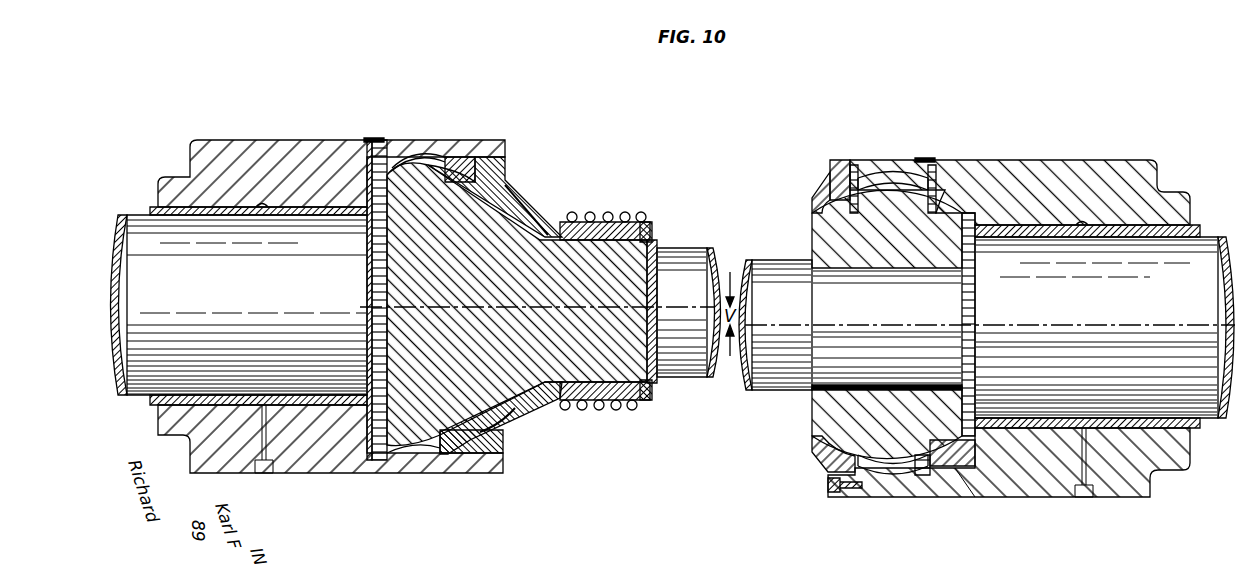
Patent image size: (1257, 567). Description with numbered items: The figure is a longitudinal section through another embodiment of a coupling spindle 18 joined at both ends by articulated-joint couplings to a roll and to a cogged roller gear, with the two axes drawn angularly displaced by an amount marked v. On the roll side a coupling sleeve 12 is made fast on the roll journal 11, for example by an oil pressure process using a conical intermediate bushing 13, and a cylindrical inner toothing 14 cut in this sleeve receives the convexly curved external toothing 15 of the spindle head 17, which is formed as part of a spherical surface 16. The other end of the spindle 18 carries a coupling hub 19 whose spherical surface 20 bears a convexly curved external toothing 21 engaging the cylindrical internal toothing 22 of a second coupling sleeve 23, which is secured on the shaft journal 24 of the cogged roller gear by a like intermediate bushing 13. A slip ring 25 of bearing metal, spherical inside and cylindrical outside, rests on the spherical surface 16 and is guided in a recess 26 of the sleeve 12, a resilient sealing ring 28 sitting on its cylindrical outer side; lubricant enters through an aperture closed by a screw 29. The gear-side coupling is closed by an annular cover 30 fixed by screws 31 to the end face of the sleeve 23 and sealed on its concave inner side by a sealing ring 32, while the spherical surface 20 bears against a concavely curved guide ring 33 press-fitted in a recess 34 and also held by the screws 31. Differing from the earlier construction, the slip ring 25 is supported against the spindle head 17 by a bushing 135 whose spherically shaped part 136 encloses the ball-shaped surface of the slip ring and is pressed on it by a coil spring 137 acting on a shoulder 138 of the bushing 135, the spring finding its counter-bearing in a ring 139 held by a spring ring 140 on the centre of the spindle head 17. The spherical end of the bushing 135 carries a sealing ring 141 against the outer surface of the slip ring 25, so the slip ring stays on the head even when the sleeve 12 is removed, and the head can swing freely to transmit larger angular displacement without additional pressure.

The roll journal 11 is at (150, 393).
The coupling sleeve 12 is at (272, 150).
The intermediate bushing 13 is at (195, 207).
The cylindrical inner toothing 14 is at (382, 470).
The convexly curved external toothing 15 is at (415, 458).
The spherical surface 16 is at (510, 166).
The spindle head 17 is at (528, 418).
The coupling spindle 18 is at (762, 262).
The coupling hub 19 is at (812, 412).
The spherical surface 20 is at (955, 200).
The convexly curved external toothing 21 is at (882, 472).
The cylindrical internal toothing 22 is at (915, 475).
The coupling sleeve 23 is at (1066, 160).
The shaft journal 24 is at (1205, 400).
The slip ring 25 is at (522, 200).
The recess 26 is at (462, 158).
The sealing ring 28 is at (455, 455).
The screw 29 is at (378, 140).
The annular cover 30 is at (838, 160).
The screws 31 is at (828, 485).
The sealing ring 32 is at (814, 196).
The guide ring 33 is at (975, 456).
The recess 34 is at (965, 497).
The bushing 135 is at (606, 213).
The spherically shaped part 136 is at (548, 226).
The coil spring 137 is at (603, 409).
The shoulder 138 is at (570, 410).
The ring 139 is at (647, 221).
The spring ring 140 is at (652, 393).
The sealing ring 141 is at (505, 450).